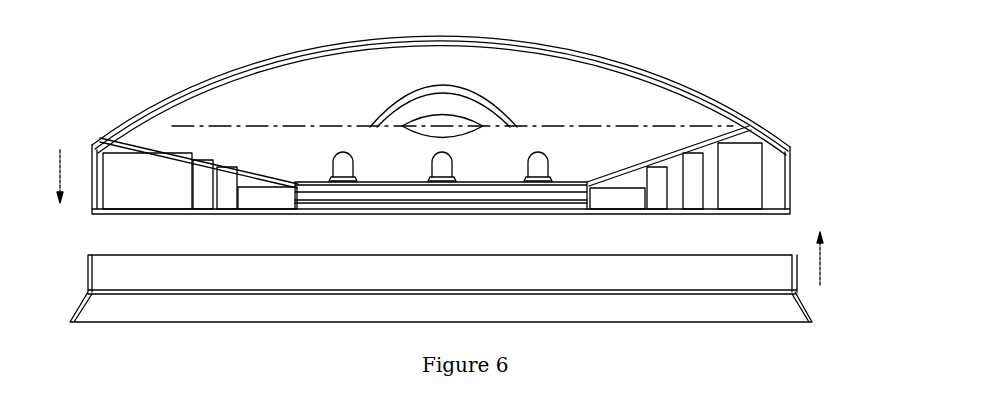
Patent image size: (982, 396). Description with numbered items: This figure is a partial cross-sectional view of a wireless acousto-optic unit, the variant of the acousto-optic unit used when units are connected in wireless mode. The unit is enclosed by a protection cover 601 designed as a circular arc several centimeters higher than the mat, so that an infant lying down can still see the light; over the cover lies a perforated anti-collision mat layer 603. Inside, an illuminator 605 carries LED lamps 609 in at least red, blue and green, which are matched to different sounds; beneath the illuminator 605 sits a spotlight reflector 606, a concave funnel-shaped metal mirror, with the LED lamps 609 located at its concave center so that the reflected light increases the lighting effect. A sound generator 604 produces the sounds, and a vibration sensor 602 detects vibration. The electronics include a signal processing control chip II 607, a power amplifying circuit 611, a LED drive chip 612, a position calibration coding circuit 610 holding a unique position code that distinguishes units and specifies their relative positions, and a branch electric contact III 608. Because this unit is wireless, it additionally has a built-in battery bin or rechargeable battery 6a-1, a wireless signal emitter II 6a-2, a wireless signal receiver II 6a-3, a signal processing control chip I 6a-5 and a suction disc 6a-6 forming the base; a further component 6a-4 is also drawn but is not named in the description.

The protection cover 601 is at (480, 51).
The vibration sensor 602 is at (448, 201).
The perforated anti-collision mat layer 603 is at (443, 41).
The sound generator 604 is at (386, 107).
The illuminator 605 is at (342, 152).
The spotlight reflector 606 is at (219, 156).
The signal processing control chip II 607 is at (696, 195).
The branch electric contact III 608 is at (99, 213).
The LED lamp 609 is at (544, 158).
The position calibration coding circuit 610 is at (657, 195).
The power amplifying circuit 611 is at (395, 192).
The LED drive chip 612 is at (735, 195).
The built-in battery bin or rechargeable battery 6a-1 is at (167, 153).
The wireless signal emitter II 6a-2 is at (208, 193).
The wireless signal receiver II 6a-3 is at (232, 197).
The component 6a-4 is at (283, 200).
The signal processing control chip I 6a-5 is at (604, 200).
The suction disc 6a-6 is at (805, 308).